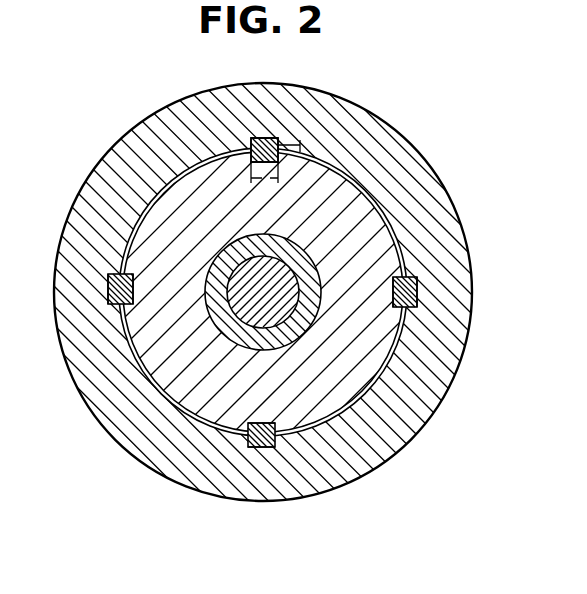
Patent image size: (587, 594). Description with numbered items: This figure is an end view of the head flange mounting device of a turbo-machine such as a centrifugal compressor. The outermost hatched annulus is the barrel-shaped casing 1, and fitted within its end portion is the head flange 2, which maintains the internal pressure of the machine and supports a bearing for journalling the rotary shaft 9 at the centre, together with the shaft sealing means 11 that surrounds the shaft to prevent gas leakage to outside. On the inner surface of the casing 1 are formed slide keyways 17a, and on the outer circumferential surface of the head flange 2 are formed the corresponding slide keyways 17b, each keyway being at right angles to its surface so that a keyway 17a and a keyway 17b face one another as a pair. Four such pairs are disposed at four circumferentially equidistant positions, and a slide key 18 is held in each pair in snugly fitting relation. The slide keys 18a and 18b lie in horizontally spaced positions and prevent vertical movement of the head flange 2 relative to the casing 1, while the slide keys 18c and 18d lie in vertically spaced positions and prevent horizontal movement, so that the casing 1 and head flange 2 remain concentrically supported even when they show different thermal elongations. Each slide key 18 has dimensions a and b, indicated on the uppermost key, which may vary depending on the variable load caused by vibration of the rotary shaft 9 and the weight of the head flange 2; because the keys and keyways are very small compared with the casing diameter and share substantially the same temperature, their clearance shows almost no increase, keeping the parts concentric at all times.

The casing 1 is at (392, 142).
The head flange 2 is at (384, 210).
The rotary shaft 9 is at (227, 328).
The shaft sealing means 11 is at (240, 312).
The slide key 18 is at (252, 142).
The slide key 18a is at (108, 283).
The slide key 18b is at (415, 277).
The slide key 18c is at (278, 139).
The slide key 18d is at (252, 447).
The slide keyway 17a is at (262, 138).
The slide keyway 17b is at (133, 302).
The dimension of slide key a is at (302, 146).
The dimension of slide key b is at (267, 178).